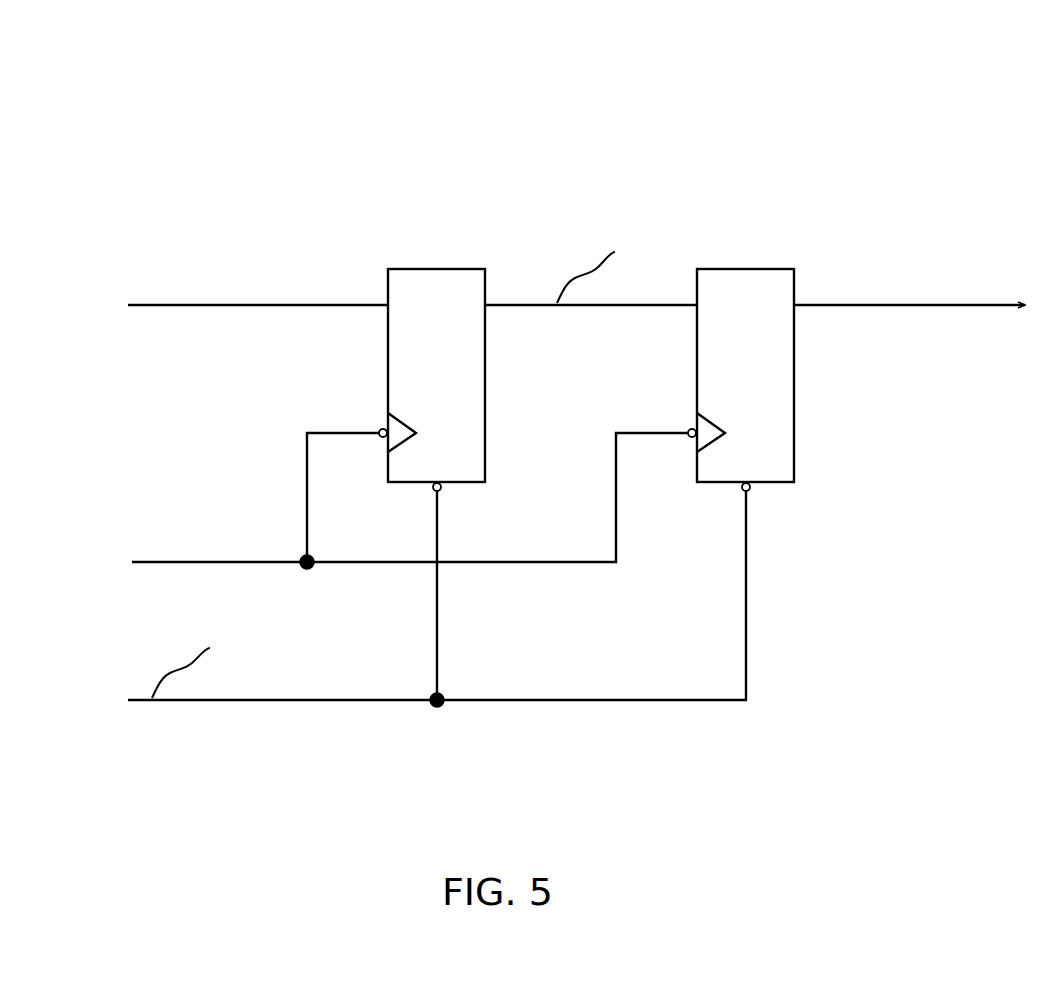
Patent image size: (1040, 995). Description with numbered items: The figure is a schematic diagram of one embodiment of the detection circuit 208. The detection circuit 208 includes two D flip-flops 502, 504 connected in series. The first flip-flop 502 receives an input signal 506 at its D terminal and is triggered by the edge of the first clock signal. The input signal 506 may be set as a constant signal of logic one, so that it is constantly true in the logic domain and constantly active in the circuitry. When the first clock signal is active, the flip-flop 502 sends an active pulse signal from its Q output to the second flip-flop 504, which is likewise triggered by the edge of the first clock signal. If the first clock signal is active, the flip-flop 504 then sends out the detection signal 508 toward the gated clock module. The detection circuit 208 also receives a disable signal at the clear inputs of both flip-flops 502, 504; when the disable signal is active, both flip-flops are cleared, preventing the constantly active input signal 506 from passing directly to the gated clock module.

The detection circuit 208 is at (135, 88).
The first D flip-flop 502 is at (485, 360).
The second D flip-flop 504 is at (795, 360).
The input signal 506 is at (152, 303).
The detection signal 508 is at (908, 305).